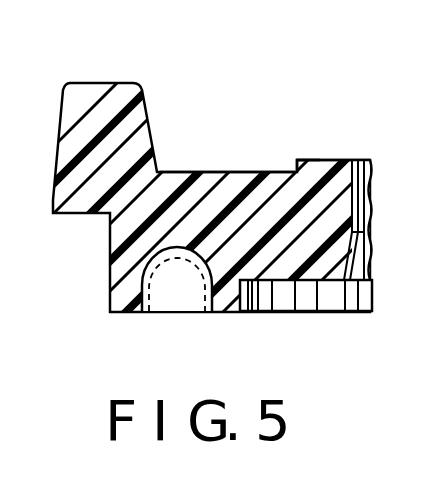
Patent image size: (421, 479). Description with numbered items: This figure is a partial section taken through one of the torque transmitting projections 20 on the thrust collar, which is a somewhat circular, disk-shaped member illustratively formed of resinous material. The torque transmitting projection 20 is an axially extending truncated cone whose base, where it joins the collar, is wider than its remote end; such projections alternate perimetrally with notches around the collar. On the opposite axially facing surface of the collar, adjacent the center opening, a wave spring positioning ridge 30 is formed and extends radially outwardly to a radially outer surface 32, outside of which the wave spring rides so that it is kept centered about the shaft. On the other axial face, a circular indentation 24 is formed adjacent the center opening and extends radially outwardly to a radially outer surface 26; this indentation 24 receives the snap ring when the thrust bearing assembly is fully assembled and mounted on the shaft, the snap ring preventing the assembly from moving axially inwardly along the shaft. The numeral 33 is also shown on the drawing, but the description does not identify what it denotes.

The torque transmitting projection 20 is at (127, 77).
The top surface of body 33 is at (212, 170).
The radially outer surface 32 is at (293, 170).
The wave spring positioning ridge 30 is at (333, 158).
The circular indentation 24 is at (327, 282).
The radially outer surface 26 is at (247, 292).